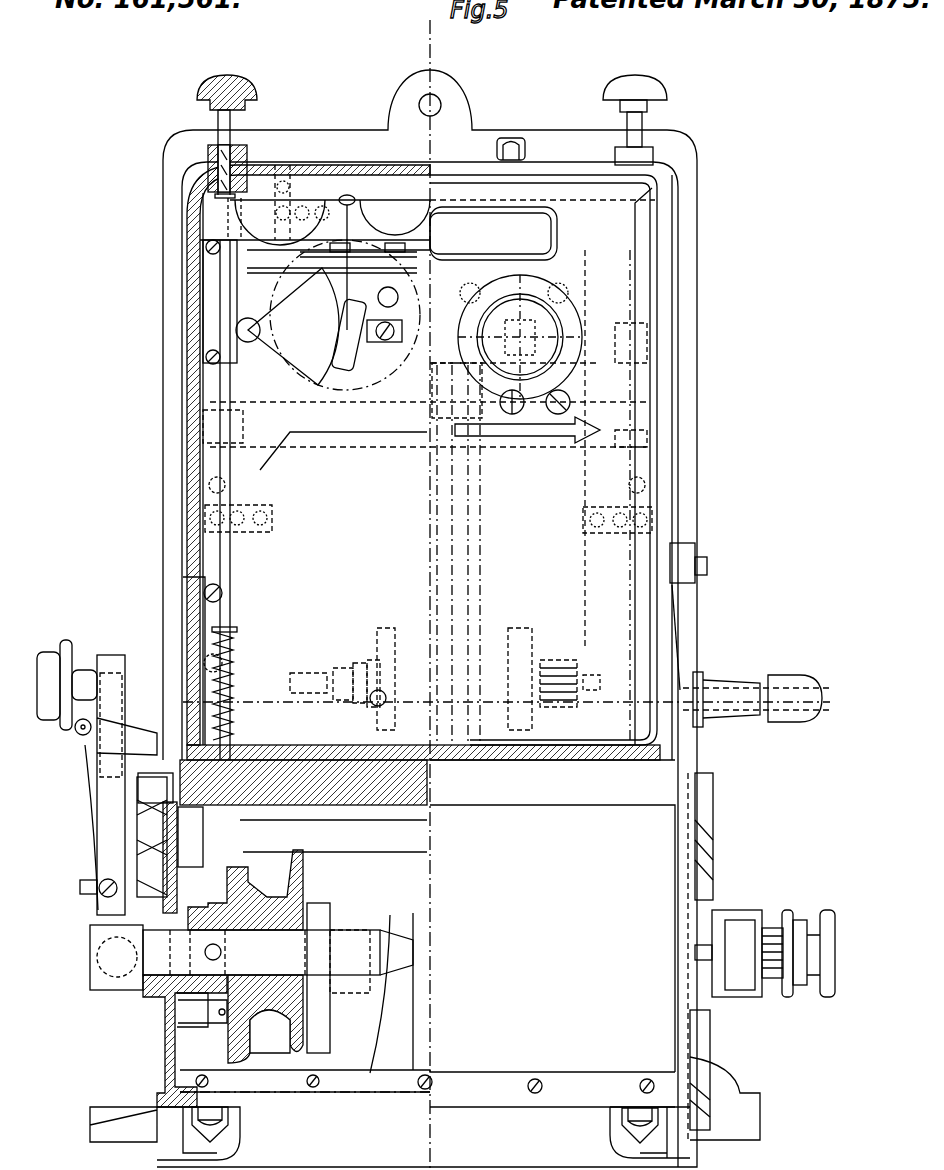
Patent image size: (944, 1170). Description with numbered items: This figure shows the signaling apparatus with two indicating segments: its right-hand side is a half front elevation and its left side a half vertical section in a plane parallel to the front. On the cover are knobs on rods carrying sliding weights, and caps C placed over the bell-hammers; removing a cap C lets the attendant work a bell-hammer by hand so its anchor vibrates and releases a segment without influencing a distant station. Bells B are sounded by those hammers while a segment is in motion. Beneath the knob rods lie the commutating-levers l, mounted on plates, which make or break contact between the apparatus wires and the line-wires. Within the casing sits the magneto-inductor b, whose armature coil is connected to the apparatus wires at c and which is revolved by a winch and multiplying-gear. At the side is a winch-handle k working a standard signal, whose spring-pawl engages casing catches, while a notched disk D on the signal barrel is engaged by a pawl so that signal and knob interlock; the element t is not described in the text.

The cap C is at (520, 149).
The bell B is at (315, 220).
The lever t is at (220, 302).
The commutating-lever l is at (315, 398).
The wire connection of the magneto-inductor c is at (210, 642).
The magneto-inductor b is at (506, 679).
The winch-handle k is at (432, 818).
The disk D is at (251, 978).